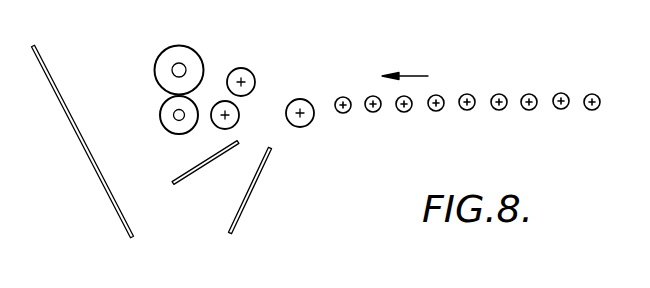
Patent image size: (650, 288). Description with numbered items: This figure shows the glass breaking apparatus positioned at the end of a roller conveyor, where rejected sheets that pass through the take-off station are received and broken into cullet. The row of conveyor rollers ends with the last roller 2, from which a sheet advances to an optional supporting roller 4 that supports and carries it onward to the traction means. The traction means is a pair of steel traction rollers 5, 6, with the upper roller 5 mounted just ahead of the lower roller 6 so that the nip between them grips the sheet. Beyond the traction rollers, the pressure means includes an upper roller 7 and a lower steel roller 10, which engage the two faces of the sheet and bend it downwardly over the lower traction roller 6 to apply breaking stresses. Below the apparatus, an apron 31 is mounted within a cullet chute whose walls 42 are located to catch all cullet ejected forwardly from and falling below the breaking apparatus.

The last roller 2 is at (377, 112).
The supporting roller 4 is at (303, 100).
The upper traction roller 5 is at (248, 70).
The lower traction roller 6 is at (239, 117).
The upper roller 7 is at (180, 68).
The lower steel roller 10 is at (176, 117).
The apron 31 is at (198, 170).
The walls 42 is at (92, 170).